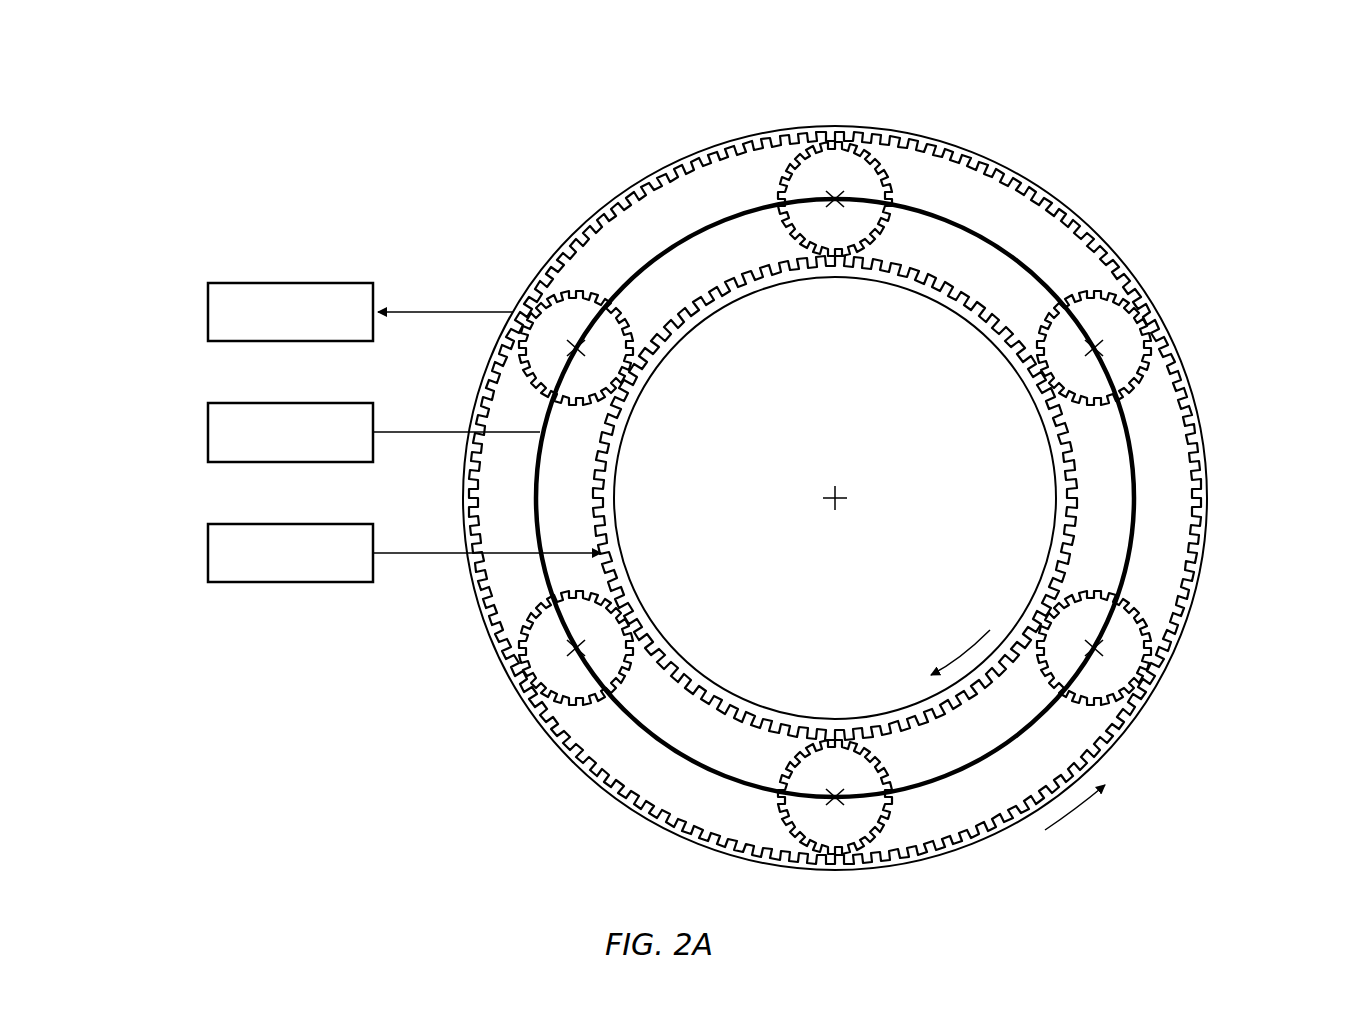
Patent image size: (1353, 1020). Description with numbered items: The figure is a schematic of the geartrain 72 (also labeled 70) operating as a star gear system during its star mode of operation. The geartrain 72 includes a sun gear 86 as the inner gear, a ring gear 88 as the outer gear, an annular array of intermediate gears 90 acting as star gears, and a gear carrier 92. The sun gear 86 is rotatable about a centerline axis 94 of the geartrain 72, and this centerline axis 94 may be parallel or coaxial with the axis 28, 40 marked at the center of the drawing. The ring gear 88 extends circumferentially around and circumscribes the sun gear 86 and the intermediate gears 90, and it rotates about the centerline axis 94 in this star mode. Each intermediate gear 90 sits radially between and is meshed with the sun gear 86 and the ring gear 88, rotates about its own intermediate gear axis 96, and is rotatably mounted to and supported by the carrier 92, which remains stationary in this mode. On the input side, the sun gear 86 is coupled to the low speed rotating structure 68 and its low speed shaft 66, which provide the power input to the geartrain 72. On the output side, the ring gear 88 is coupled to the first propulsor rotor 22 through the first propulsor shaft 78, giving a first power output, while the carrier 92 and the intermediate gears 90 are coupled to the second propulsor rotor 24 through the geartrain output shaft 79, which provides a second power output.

The planetary gear set 70 is at (889, 480).
The geartrain 72 is at (1228, 112).
The ring gear 88 is at (1064, 191).
The gear carrier 92 is at (1140, 498).
The sun gear 86 is at (1040, 418).
The intermediate gear 90 is at (879, 162).
The intermediate gear axis 96 is at (835, 203).
The axis 28 is at (849, 534).
The axis 40 is at (849, 534).
The centerline axis 94 is at (838, 502).
The first propulsor rotor 22 is at (301, 312).
The first propulsor shaft 78 is at (208, 306).
The second propulsor rotor 24 is at (315, 432).
The geartrain output shaft 79 is at (208, 428).
The low speed shaft 66 is at (348, 553).
The low speed rotating structure 68 is at (208, 548).